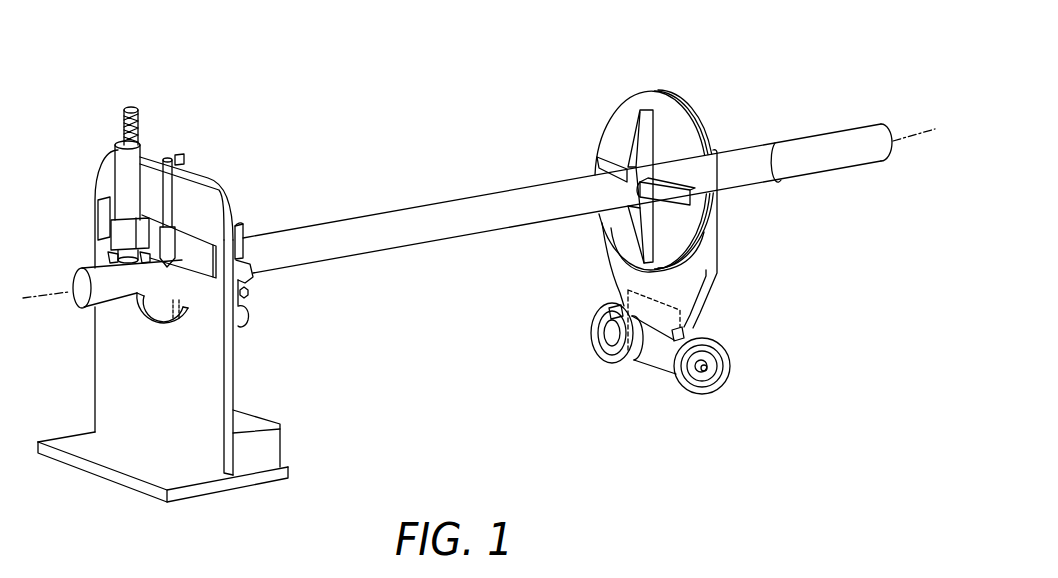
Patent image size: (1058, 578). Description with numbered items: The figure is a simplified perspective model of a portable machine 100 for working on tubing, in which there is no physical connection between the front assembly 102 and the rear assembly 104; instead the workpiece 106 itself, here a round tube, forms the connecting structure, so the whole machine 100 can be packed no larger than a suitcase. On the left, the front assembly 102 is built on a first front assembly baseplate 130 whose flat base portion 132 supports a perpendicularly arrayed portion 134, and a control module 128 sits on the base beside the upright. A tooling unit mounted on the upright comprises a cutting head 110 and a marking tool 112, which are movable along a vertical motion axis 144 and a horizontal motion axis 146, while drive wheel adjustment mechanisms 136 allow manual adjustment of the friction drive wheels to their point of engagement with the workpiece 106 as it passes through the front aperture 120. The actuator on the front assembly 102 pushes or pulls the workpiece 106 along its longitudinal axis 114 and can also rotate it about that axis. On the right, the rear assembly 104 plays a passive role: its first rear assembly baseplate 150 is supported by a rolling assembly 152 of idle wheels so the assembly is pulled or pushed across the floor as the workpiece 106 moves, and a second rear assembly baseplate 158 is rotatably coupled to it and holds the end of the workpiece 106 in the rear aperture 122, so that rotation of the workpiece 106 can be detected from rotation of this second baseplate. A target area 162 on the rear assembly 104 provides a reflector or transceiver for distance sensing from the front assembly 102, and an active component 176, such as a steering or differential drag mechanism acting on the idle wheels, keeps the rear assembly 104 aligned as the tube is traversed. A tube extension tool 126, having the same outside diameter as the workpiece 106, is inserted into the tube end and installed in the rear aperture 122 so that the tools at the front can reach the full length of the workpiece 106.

The machine 100 is at (396, 77).
The front assembly 102 is at (95, 405).
The rear assembly 104 is at (718, 240).
The workpiece 106 is at (377, 213).
The cutting head 110 is at (118, 178).
The marking tool 112 is at (178, 206).
The longitudinal axis 114 is at (915, 137).
The front aperture 120 is at (133, 300).
The rear aperture 122 is at (660, 155).
The tube extension tool 126 is at (808, 133).
The control module 128 is at (285, 447).
The first front assembly baseplate 130 is at (235, 377).
The base portion 132 is at (183, 500).
The perpendicularly arrayed portion 134 is at (95, 373).
The drive wheel adjustment mechanism 136 is at (186, 160).
The vertical motion axis 144 is at (152, 162).
The horizontal motion axis 146 is at (100, 217).
The first rear assembly baseplate 150 is at (607, 253).
The rolling assembly 152 is at (593, 327).
The second rear assembly baseplate 158 is at (658, 97).
The target area 162 is at (653, 298).
The active component 176 is at (648, 345).